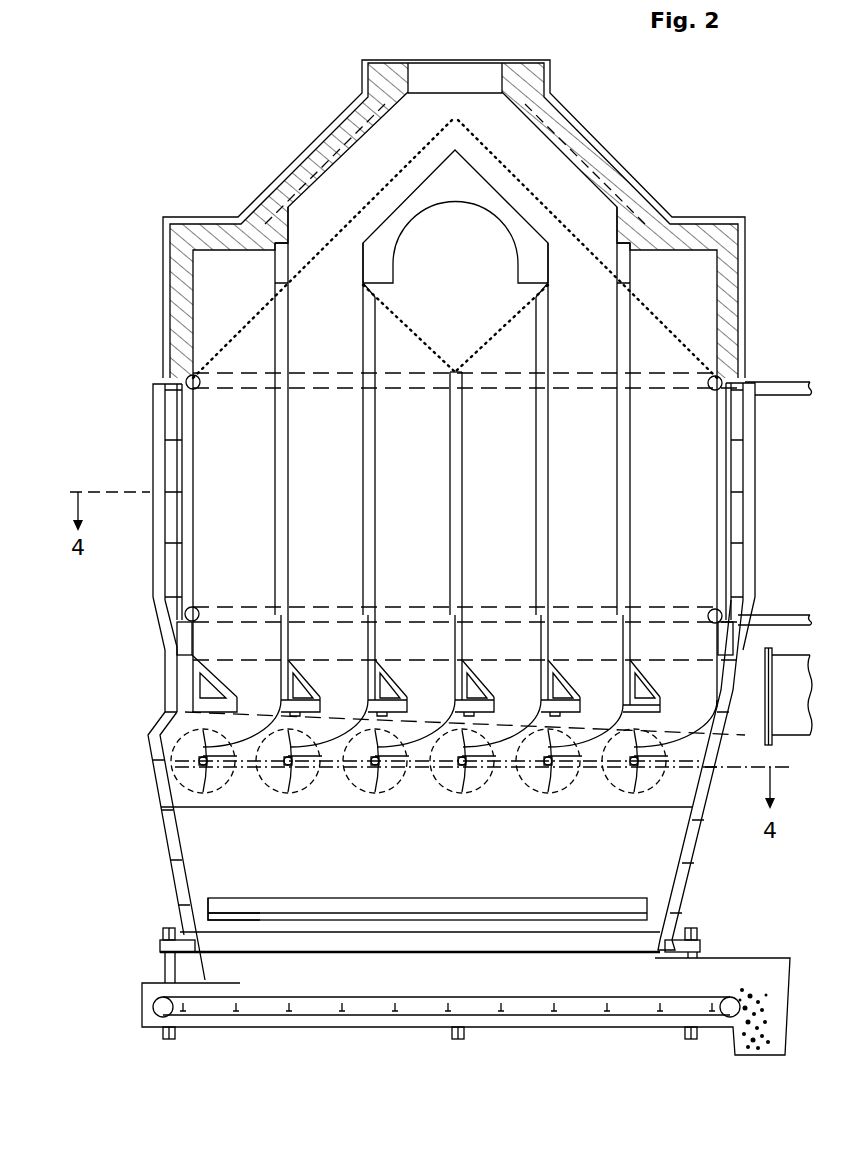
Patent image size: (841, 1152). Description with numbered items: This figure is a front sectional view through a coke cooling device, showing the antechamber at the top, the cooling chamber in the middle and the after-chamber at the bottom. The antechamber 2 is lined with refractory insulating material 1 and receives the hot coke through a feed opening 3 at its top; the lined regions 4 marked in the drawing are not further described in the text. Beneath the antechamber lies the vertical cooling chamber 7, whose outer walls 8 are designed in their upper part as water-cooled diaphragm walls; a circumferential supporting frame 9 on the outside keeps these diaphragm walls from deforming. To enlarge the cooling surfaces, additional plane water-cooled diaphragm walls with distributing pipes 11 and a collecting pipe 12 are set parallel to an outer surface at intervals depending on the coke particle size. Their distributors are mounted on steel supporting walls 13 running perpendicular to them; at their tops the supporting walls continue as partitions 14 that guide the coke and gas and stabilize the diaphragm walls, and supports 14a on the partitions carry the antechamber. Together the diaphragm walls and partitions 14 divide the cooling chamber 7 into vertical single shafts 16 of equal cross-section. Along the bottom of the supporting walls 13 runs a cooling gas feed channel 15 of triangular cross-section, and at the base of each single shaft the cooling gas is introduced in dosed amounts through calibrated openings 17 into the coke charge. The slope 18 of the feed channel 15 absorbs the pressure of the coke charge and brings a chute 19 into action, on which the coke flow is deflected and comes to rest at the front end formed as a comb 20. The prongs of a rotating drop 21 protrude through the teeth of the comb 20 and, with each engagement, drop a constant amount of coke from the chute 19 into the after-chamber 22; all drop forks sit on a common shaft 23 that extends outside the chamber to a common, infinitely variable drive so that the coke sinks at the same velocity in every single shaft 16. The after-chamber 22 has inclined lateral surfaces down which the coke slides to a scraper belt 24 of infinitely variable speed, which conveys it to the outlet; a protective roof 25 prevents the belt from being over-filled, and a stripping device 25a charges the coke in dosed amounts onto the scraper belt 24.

The refractory insulating material 1 is at (338, 148).
The antechamber 2 is at (363, 176).
The feed opening 3 is at (468, 89).
The refractory insulation lining 4 is at (218, 286).
The cooling chamber 7 is at (405, 443).
The outer walls 8 is at (192, 460).
The supporting frame 9 is at (172, 543).
The distributing pipes 11 is at (197, 609).
The collecting pipe 12 is at (197, 389).
The supporting walls 13 is at (375, 640).
The partitions 14 is at (288, 543).
The supports 14a is at (288, 350).
The cooling gas feed channel 15 is at (218, 697).
The single shafts 16 is at (217, 484).
The calibrated openings 17 is at (400, 712).
The slope 18 is at (296, 677).
The chute 19 is at (398, 750).
The comb 20 is at (303, 750).
The rotating drop 21 is at (285, 767).
The after-chamber 22 is at (419, 889).
The common shaft 23 is at (285, 764).
The scraper belt 24 is at (500, 1010).
The protective roof 25 is at (497, 906).
The stripping device 25a is at (236, 915).